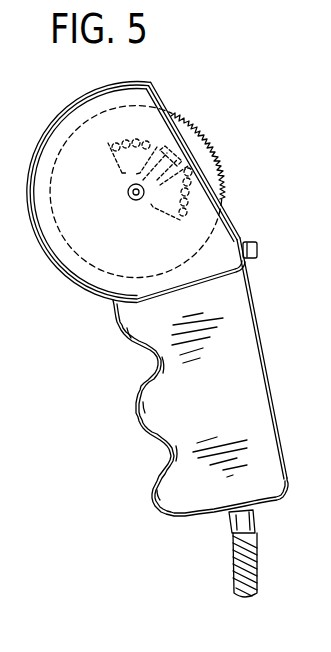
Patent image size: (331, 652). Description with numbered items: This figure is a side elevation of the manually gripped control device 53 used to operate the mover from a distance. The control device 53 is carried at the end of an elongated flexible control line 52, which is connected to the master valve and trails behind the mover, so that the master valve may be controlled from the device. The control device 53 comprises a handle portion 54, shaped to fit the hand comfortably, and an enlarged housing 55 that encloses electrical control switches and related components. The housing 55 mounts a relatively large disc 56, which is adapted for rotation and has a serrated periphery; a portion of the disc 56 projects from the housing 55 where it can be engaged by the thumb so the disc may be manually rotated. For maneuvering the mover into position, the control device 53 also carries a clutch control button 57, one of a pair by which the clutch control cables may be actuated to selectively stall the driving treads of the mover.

The control line 52 is at (258, 550).
The control device 53 is at (285, 354).
The handle portion 54 is at (250, 297).
The housing 55 is at (222, 225).
The disc 56 is at (214, 162).
The clutch control button 57 is at (257, 246).